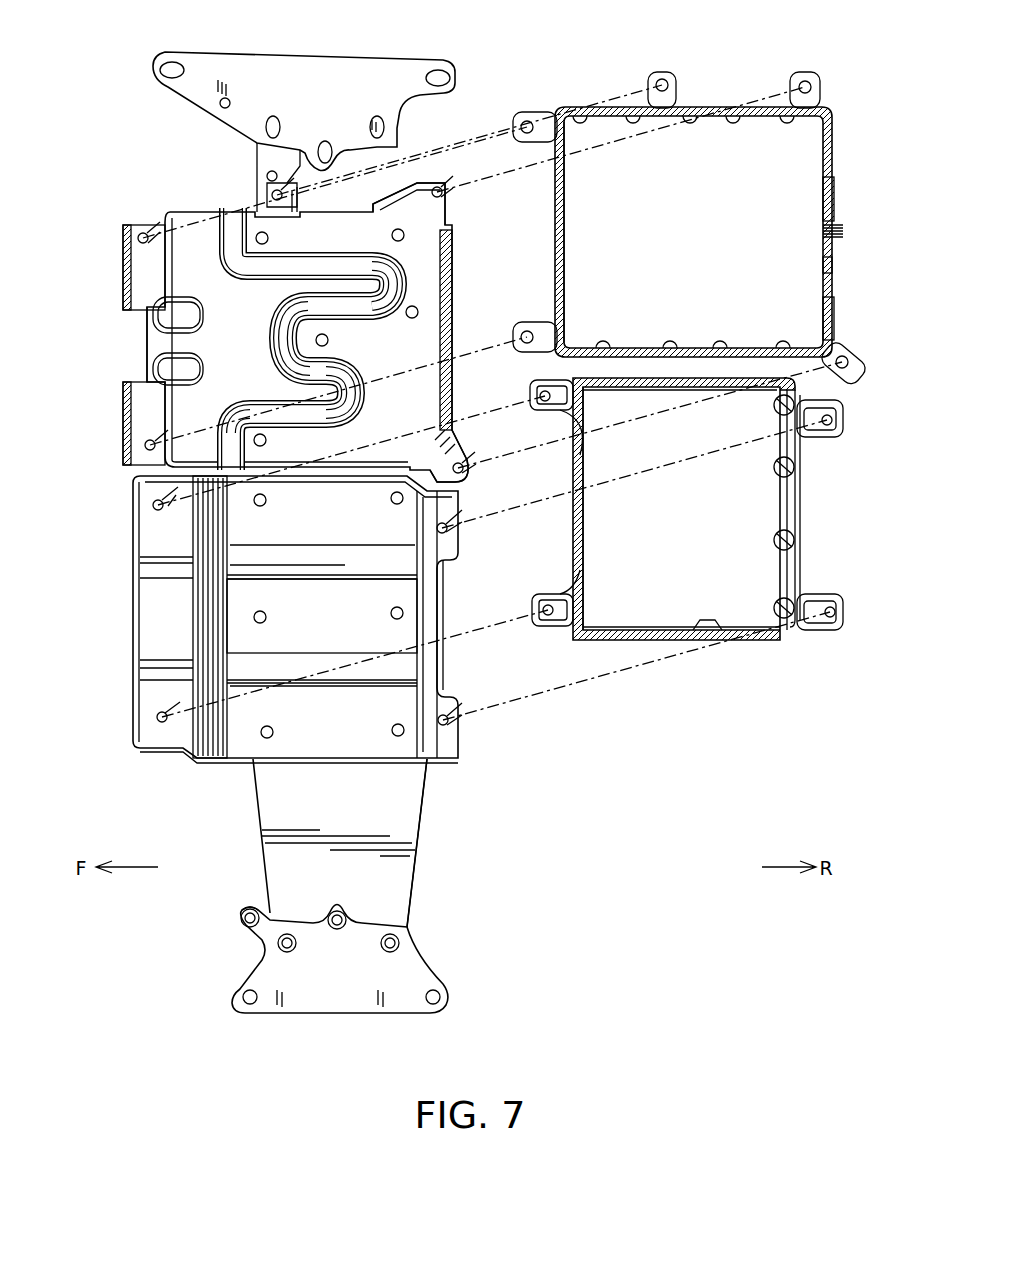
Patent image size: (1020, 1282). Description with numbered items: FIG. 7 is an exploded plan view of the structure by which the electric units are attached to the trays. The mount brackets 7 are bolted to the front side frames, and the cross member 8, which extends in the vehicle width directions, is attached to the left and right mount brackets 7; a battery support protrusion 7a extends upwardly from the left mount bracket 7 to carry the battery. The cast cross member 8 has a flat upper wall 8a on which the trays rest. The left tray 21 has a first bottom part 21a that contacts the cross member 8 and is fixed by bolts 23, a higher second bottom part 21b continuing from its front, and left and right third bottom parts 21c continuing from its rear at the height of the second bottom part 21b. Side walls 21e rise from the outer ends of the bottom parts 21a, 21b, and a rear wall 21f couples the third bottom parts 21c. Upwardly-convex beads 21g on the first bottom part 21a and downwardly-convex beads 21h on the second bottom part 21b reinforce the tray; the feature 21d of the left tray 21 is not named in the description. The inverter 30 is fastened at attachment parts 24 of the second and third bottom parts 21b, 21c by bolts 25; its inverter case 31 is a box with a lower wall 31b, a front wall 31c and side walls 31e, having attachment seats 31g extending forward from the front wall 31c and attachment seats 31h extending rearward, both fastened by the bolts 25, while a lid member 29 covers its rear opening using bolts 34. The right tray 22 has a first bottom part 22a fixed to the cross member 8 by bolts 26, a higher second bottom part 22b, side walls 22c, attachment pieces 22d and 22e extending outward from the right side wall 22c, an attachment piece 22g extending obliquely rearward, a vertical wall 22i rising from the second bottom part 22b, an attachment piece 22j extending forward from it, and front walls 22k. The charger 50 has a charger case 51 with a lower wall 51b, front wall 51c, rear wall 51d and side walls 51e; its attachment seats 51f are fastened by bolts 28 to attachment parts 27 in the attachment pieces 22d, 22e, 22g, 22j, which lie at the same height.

The mount bracket 7 is at (305, 70).
The battery support protrusion 7a is at (246, 924).
The cross member 8 is at (247, 810).
The upper wall 8a is at (410, 812).
The left tray 21 is at (286, 641).
The first bottom part 21a is at (308, 614).
The second bottom part 21b is at (165, 636).
The third bottom parts 21c is at (446, 548).
The housing partition wall 21d is at (132, 590).
The side walls 21e is at (328, 488).
The beads 21g is at (240, 546).
The rear wall 21f is at (445, 606).
The beads 21h is at (150, 562).
The right tray 22 is at (293, 293).
The first bottom part 22a is at (368, 351).
The second bottom part 22b is at (215, 336).
The side walls 22c is at (322, 214).
The attachment piece 22d is at (270, 192).
The attachment piece 22e is at (422, 180).
The attachment piece 22g is at (463, 456).
The vertical wall 22i is at (162, 286).
The attachment piece 22j is at (145, 396).
The front walls 22k is at (124, 291).
The bolts 23 is at (266, 504).
The attachment parts 24 is at (153, 509).
The bolts 25 is at (540, 395).
The bolts 26 is at (403, 241).
The attachment parts 27 is at (143, 232).
The bolts 28 is at (670, 86).
The lid member 29 is at (800, 501).
The inverter 30 is at (679, 524).
The inverter case 31 is at (679, 524).
The lower wall 31b is at (676, 509).
The front wall 31c is at (585, 510).
The side walls 31e is at (617, 389).
The attachment seats 31g is at (582, 454).
The attachment seats 31h is at (826, 438).
The bolts 34 is at (793, 536).
The charger 50 is at (677, 215).
The charger case 51 is at (677, 215).
The lower wall 51b is at (668, 229).
The front wall 51c is at (563, 222).
The rear wall 51d is at (823, 195).
The side walls 51e is at (762, 117).
The attachment seats 51f is at (526, 112).